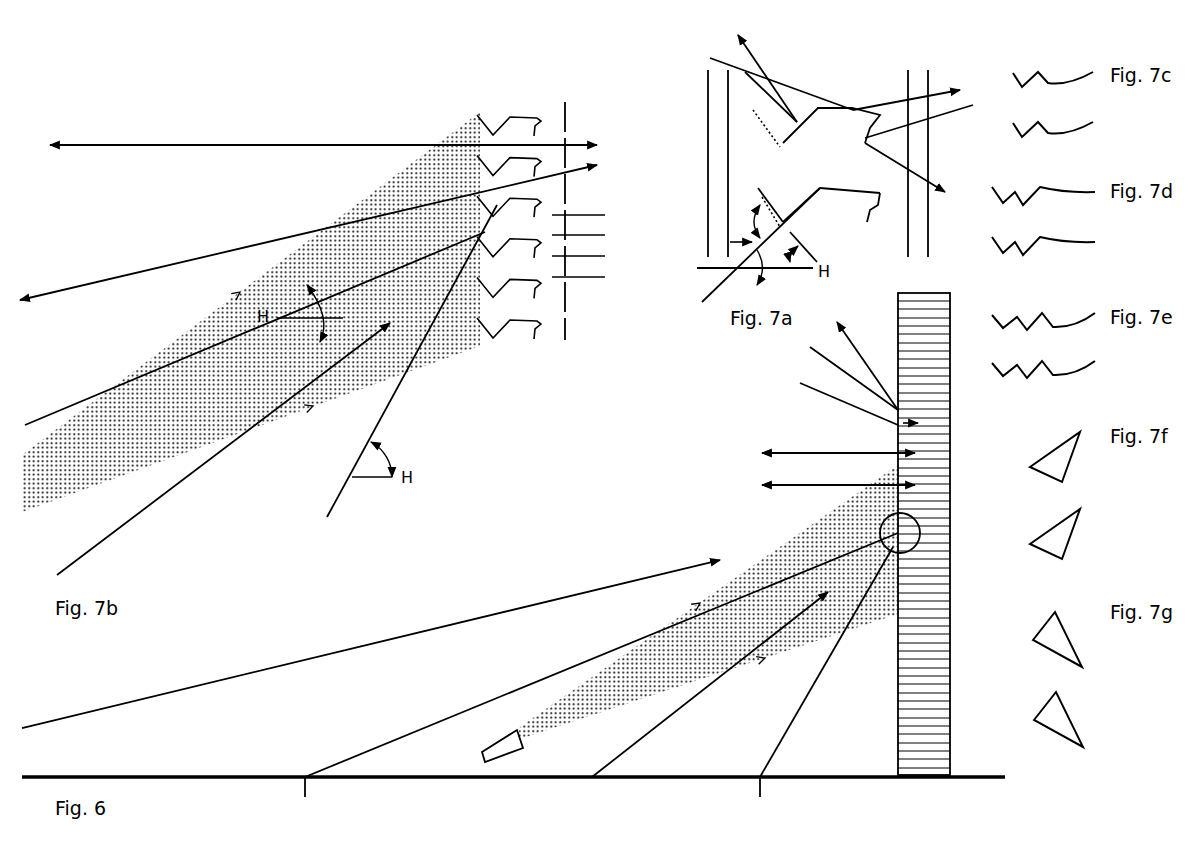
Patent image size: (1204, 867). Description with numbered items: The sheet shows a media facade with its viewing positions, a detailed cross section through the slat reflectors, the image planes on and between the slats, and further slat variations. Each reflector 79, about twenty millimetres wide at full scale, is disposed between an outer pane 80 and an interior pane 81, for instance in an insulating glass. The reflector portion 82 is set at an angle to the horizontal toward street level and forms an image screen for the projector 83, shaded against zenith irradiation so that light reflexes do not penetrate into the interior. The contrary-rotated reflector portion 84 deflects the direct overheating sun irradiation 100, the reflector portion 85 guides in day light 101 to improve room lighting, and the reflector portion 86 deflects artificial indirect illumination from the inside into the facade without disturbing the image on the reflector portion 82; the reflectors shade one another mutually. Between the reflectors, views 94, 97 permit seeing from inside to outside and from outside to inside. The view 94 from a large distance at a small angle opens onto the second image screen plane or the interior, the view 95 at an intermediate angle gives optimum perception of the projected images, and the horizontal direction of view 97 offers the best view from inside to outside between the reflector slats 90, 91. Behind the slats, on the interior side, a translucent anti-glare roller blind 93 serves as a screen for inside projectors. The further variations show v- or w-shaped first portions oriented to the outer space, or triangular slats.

In FIG. 7A, the reflector 79 is at (857, 226).
In FIG. 7A, the outer pane 80 is at (708, 154).
In FIG. 7A, the interior pane 81 is at (928, 211).
In FIG. 7A, the reflector portion 82 is at (757, 192).
In FIG. 6, the projector 83 is at (512, 751).
In FIG. 7A, the reflector portion 84 is at (806, 200).
In FIG. 7A, the reflector portion 85 is at (852, 190).
In FIG. 7A, the reflector portion 86 is at (872, 206).
In FIG. 7B, the reflector slat 90 is at (590, 225).
In FIG. 7B, the reflector slat 91 is at (590, 267).
In FIG. 7B, the anti-glare roller blind 93 is at (565, 102).
In FIG. 7B, the view 94 is at (178, 263).
In FIG. 7B, the view 95 is at (224, 448).
In FIG. 7B, the horizontal direction of view 97 is at (178, 144).
In FIG. 6, the sun irradiation 100 is at (858, 349).
In FIG. 6, the day light 101 is at (800, 383).